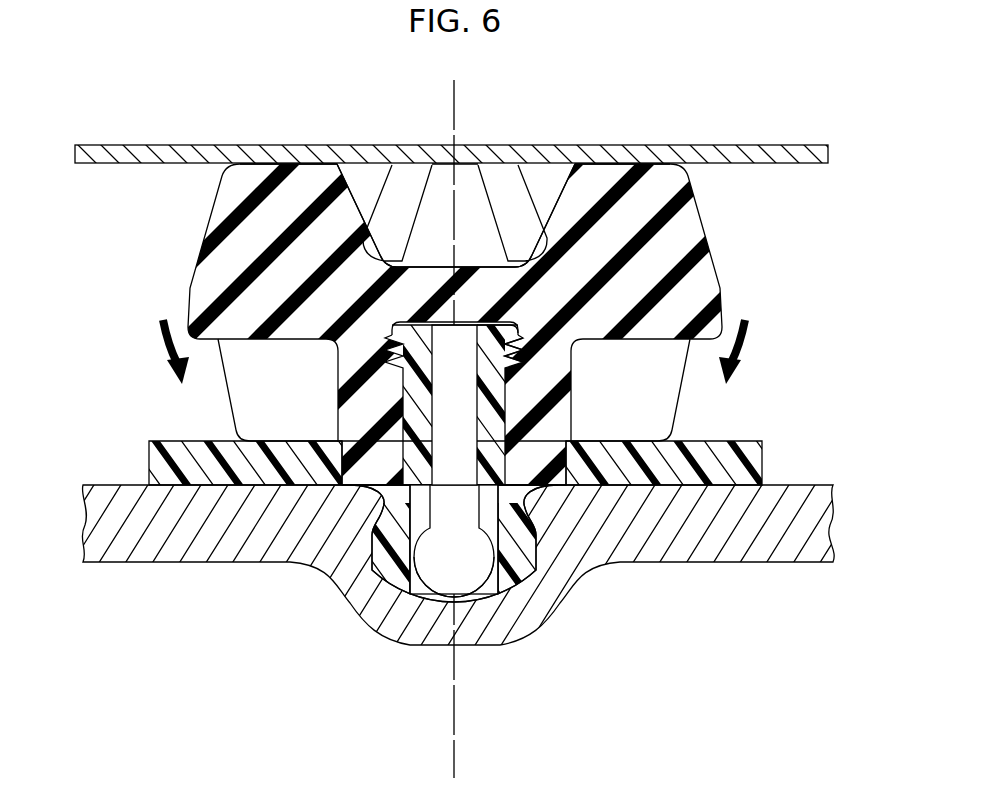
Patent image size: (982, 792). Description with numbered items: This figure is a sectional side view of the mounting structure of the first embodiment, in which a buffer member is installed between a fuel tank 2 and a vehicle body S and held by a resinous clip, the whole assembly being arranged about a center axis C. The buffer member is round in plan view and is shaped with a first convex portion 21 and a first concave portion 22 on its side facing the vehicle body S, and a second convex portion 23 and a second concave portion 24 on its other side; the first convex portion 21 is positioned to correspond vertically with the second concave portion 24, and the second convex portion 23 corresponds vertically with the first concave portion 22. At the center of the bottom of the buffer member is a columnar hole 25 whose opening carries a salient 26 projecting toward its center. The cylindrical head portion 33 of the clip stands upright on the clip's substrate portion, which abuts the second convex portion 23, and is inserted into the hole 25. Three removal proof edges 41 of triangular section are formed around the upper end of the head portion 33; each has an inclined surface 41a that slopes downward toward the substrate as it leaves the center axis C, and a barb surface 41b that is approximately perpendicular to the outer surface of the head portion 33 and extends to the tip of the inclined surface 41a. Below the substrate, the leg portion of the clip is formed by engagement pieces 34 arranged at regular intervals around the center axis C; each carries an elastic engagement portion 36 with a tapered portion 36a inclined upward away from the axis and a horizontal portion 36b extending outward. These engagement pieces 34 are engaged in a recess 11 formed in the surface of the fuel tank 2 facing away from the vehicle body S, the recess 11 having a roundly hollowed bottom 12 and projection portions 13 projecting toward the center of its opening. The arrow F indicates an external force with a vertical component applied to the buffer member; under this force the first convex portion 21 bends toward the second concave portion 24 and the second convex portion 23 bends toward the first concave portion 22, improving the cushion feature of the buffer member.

The vehicle body S is at (793, 148).
The first convex portion 21 is at (290, 161).
The first concave portion 22 is at (346, 185).
The second convex portion 23 is at (234, 420).
The second concave portion 24 is at (269, 345).
The hole 25 is at (414, 321).
The salient 26 is at (507, 413).
The head portion 33 is at (491, 321).
The removal proof edge 41 is at (388, 342).
The inclined surface 41a is at (519, 346).
The barb surface 41b is at (519, 358).
The projection portion 13 is at (369, 505).
The roundly hollowed bottom 12 is at (446, 600).
The recess 11 is at (483, 600).
The fuel tank 2 is at (776, 614).
The engagement piece 34 is at (431, 594).
The elastic engagement portion 36 is at (657, 577).
The tapered portion 36a is at (528, 585).
The horizontal portion 36b is at (548, 565).
The arrow F is at (160, 324).
The center axis C is at (452, 748).